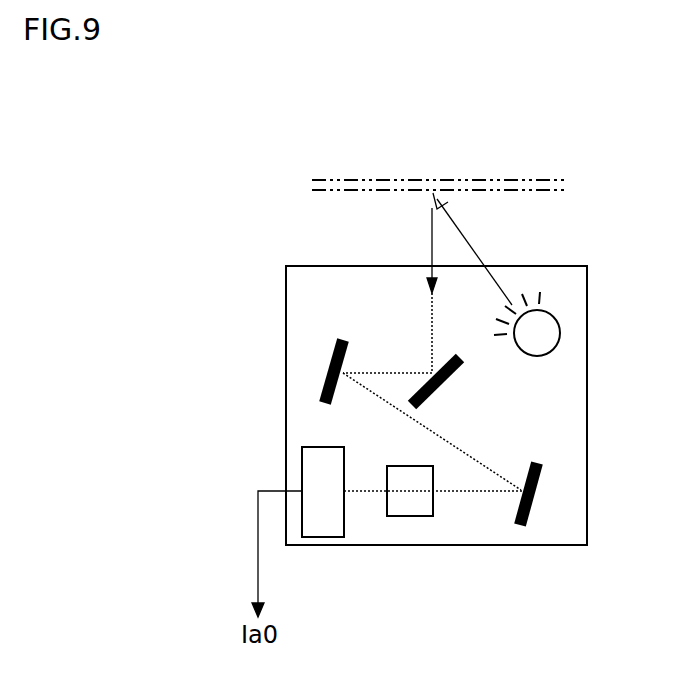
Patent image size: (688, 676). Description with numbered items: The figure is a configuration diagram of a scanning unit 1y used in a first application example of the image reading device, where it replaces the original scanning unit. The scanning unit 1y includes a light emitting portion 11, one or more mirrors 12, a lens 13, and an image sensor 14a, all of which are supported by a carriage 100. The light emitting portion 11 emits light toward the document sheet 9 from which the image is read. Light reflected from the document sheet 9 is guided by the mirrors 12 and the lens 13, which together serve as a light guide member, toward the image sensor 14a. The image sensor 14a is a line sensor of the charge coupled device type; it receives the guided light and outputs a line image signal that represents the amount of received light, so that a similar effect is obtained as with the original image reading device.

The document sheet 9 is at (457, 180).
The scanning unit 1y is at (581, 249).
The light emitting portion 11 is at (552, 352).
The mirrors 12 is at (448, 376).
The lens 13 is at (411, 516).
The image sensor 14a is at (323, 537).
The carriage 100 is at (518, 545).